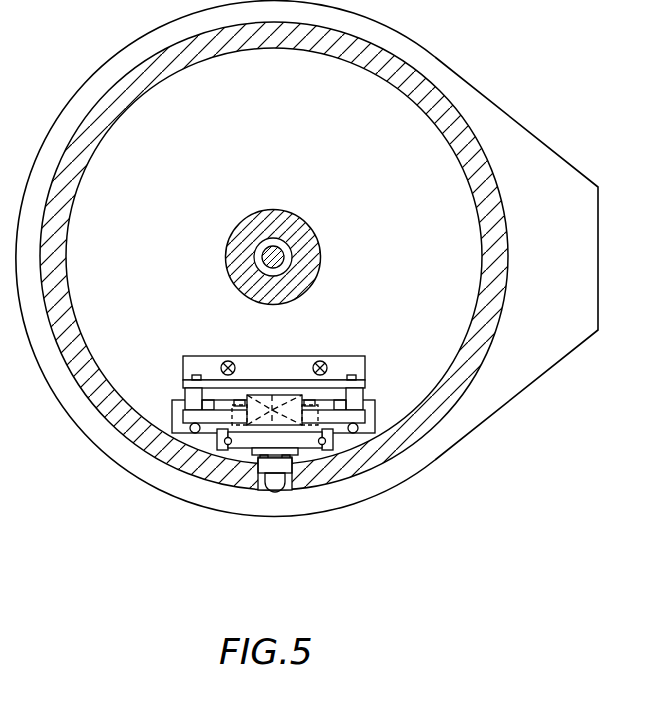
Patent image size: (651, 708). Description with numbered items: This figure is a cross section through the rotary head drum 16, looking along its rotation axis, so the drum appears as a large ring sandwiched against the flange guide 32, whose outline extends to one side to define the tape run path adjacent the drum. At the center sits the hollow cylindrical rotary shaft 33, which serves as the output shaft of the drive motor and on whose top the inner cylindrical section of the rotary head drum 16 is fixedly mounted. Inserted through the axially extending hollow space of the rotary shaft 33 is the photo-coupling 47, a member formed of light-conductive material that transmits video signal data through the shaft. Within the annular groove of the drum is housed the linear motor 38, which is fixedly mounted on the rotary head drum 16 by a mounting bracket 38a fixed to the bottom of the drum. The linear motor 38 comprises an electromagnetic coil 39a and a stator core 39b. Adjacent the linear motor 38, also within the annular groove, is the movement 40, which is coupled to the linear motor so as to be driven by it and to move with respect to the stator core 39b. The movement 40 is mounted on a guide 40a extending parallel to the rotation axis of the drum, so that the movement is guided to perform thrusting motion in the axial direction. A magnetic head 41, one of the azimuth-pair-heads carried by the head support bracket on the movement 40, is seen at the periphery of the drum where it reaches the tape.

The rotary head drum 16 is at (123, 78).
The flange guide 32 is at (482, 103).
The rotary shaft 33 is at (313, 234).
The photo-coupling 47 is at (263, 255).
The linear motor 38 is at (203, 442).
The mounting bracket 38a is at (338, 385).
The electromagnetic coil 39a is at (267, 408).
The stator core 39b is at (318, 403).
The movement 40 is at (312, 446).
The guide 40a is at (333, 447).
The magnetic head 41 is at (275, 493).